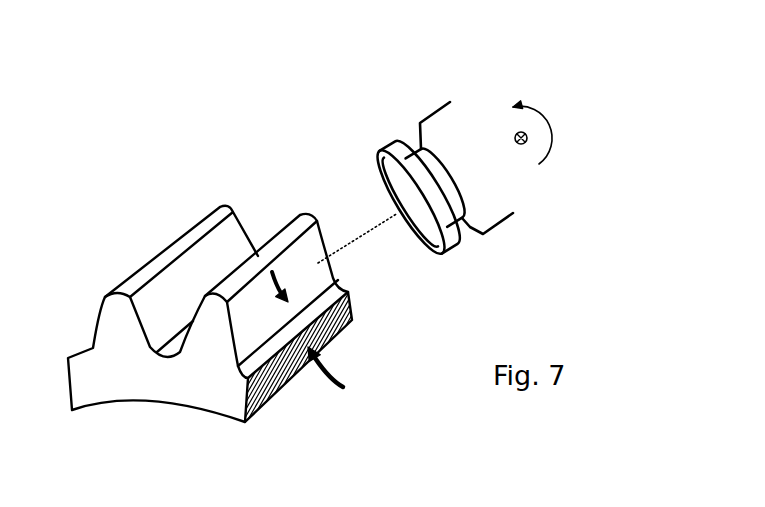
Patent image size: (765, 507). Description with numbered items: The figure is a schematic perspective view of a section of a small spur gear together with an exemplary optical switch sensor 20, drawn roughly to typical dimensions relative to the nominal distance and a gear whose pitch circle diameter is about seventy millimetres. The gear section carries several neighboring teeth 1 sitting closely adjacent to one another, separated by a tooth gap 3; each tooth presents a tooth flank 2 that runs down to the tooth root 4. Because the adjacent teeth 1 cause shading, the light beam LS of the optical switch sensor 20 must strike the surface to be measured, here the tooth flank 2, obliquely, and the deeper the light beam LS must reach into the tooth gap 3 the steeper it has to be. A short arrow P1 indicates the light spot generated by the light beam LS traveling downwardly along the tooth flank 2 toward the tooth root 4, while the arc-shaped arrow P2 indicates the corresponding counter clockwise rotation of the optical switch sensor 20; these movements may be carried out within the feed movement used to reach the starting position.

The teeth 1 is at (112, 318).
The tooth flank 2 is at (297, 293).
The tooth gap 3 is at (263, 220).
The tooth root 4 is at (266, 361).
The optical switch sensor 20 is at (378, 104).
The light beam LS is at (362, 238).
The short arrow P1 is at (294, 284).
The arc-shaped arrow P2 is at (546, 132).